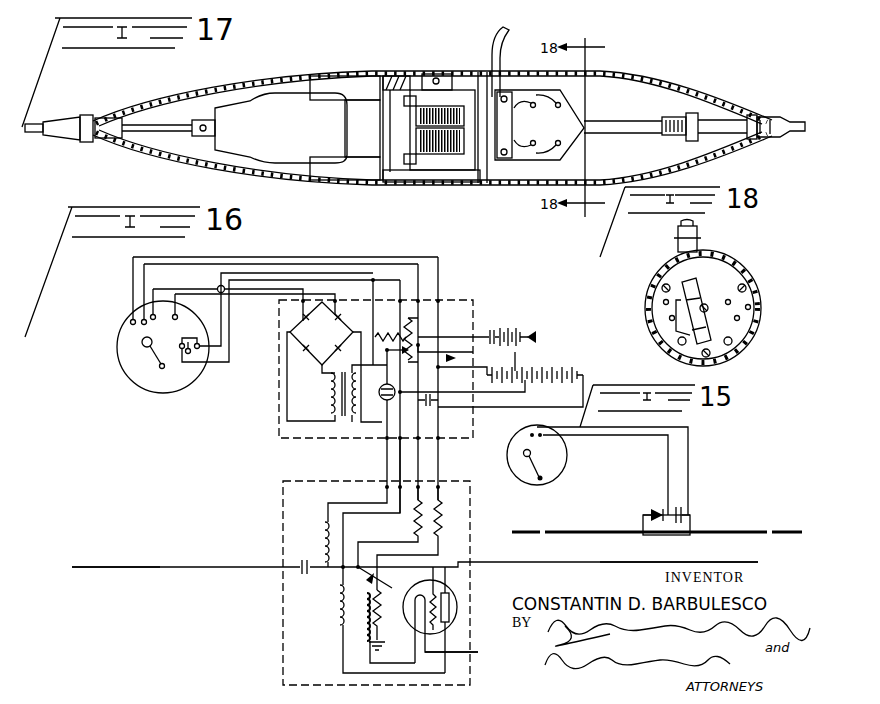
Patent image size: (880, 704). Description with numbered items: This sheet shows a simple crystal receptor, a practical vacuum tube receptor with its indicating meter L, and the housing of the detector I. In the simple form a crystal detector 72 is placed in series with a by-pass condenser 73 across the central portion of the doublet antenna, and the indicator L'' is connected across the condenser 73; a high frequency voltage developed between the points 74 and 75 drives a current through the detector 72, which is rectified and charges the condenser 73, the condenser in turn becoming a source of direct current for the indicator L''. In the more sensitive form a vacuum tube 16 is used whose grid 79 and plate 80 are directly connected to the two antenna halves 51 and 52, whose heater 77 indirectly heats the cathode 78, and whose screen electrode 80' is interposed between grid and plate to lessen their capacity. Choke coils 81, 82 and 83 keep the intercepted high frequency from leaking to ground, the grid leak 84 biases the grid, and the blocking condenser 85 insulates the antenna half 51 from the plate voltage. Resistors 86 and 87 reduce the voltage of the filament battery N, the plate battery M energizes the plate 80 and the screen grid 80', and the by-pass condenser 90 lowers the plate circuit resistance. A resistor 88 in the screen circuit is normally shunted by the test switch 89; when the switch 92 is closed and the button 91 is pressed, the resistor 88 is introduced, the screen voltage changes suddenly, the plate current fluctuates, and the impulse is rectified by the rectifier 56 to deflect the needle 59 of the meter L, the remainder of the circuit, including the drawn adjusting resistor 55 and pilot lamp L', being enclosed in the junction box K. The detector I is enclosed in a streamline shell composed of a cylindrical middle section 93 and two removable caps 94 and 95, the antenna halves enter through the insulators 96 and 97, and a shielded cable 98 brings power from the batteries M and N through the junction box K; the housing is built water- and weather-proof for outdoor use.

In FIG. 17, the cylindrical middle section 93 is at (374, 76).
In FIG. 17, the removable cap 94 is at (222, 80).
In FIG. 17, the removable cap 95 is at (636, 78).
In FIG. 17, the insulator 96 is at (68, 135).
In FIG. 17, the insulator 97 is at (746, 132).
In FIG. 17, the shielded cable 98 is at (497, 33).
In FIG. 16, the rotary switch arm 59 is at (143, 345).
In FIG. 16, the test switch 89 is at (200, 344).
In FIG. 16, the button 91 is at (190, 364).
In FIG. 16, the direct current meter L is at (277, 335).
In FIG. 16, the junction box K is at (279, 420).
In FIG. 16, the rectifier 56 is at (321, 333).
In FIG. 16, the resistor 88 is at (390, 327).
In FIG. 16, the rheostat 55 is at (411, 337).
In FIG. 16, the pilot lamp L' is at (390, 394).
In FIG. 16, the by-pass condenser 90 is at (431, 408).
In FIG. 16, the switch 92 is at (488, 333).
In FIG. 16, the filament battery N is at (513, 322).
In FIG. 16, the plate battery M is at (562, 368).
In FIG. 16, the detector I is at (376, 583).
In FIG. 16, the choke coil 81 is at (322, 541).
In FIG. 16, the resistor 86 is at (416, 522).
In FIG. 16, the resistor 87 is at (466, 500).
In FIG. 16, the blocking condenser 85 is at (300, 570).
In FIG. 16, the half of the doublet antenna 51 is at (158, 567).
In FIG. 15, the half of the doublet antenna 51 is at (566, 531).
In FIG. 16, the half of the doublet antenna 52 is at (572, 564).
In FIG. 15, the half of the doublet antenna 52 is at (746, 531).
In FIG. 16, the choke coil 82 is at (340, 610).
In FIG. 16, the grid leak 84 is at (357, 572).
In FIG. 16, the choke coil 83 is at (365, 630).
In FIG. 16, the cathode 78 is at (427, 596).
In FIG. 16, the vacuum tube 16 is at (457, 602).
In FIG. 16, the grid 79 is at (428, 596).
In FIG. 16, the plate 80 is at (462, 598).
In FIG. 16, the screen electrode 80' is at (470, 620).
In FIG. 16, the heater 77 is at (462, 657).
In FIG. 15, the indicator L'' is at (553, 455).
In FIG. 15, the crystal detector 72 is at (649, 514).
In FIG. 15, the by-pass condenser 73 is at (686, 512).
In FIG. 15, the point 74 is at (644, 535).
In FIG. 15, the point 75 is at (689, 535).